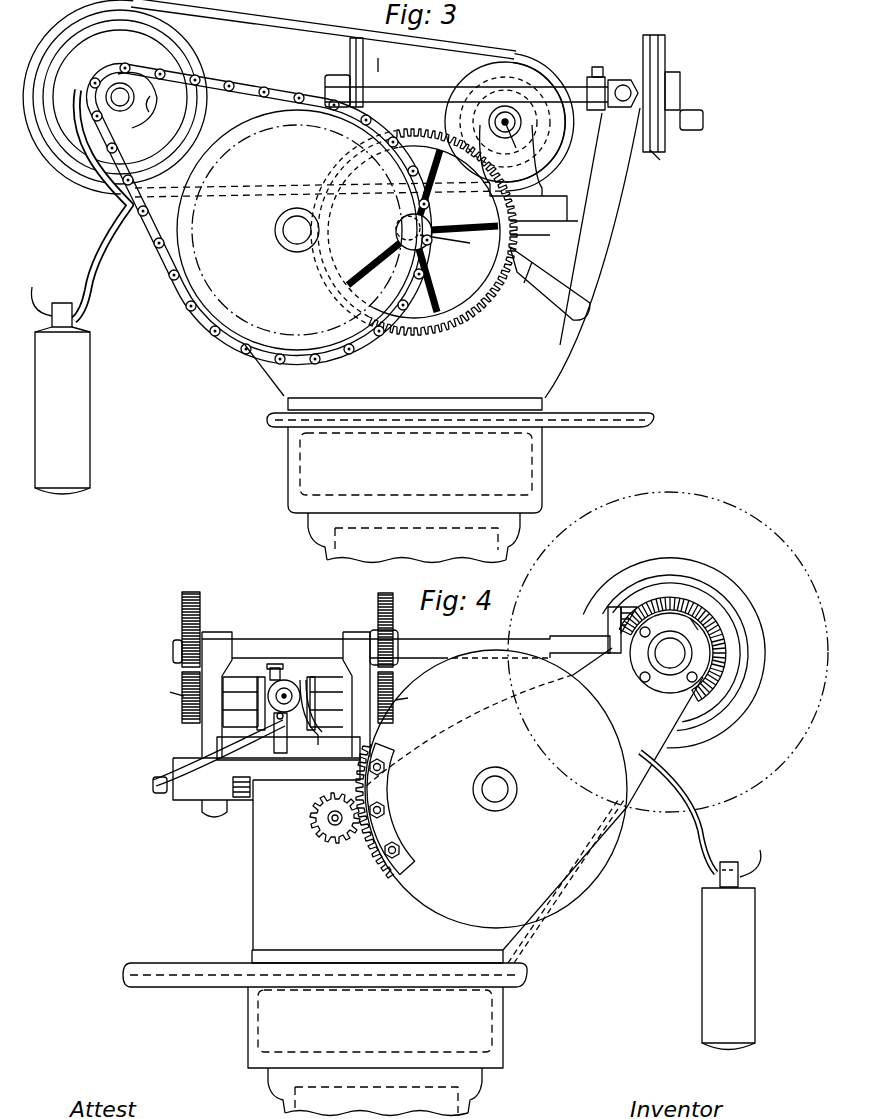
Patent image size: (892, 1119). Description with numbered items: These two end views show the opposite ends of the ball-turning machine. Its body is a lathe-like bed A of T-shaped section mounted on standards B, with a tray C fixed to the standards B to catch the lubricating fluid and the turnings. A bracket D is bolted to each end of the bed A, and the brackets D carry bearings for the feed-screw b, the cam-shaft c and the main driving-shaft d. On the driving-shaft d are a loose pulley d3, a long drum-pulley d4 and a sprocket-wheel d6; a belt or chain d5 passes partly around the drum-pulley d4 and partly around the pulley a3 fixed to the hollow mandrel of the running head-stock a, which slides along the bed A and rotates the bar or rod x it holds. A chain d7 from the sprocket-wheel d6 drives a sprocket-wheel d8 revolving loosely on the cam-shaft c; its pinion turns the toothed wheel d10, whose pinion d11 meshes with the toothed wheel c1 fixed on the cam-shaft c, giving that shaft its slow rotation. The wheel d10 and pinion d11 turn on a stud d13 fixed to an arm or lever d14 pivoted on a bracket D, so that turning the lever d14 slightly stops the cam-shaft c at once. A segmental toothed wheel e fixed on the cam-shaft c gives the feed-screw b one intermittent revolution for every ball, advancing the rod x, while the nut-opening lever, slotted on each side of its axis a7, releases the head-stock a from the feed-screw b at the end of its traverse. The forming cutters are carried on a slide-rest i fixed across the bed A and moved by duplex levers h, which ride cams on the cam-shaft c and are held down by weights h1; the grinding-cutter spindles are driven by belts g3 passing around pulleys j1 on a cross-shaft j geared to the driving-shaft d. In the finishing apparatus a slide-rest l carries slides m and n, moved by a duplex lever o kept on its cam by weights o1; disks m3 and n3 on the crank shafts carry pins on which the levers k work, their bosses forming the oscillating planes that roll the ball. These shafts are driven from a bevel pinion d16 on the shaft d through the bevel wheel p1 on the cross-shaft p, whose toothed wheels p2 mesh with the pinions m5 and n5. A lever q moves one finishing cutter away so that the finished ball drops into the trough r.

In FIG. 3, the main driving-shaft d is at (120, 97).
In FIG. 4, the main driving-shaft d is at (670, 653).
In FIG. 4, the loose pulley d3 is at (668, 652).
In FIG. 3, the drum-pulley d4 is at (259, 200).
In FIG. 4, the drum-pulley d4 is at (674, 657).
In FIG. 3, the belt or chain d5 is at (298, 98).
In FIG. 3, the sprocket-wheel d6 is at (137, 102).
In FIG. 3, the chain d7 is at (214, 181).
In FIG. 3, the sprocket-wheel d8 is at (282, 300).
In FIG. 3, the toothed wheel d10 is at (414, 234).
In FIG. 3, the toothed pinion d11 is at (445, 235).
In FIG. 3, the stud or axle d13 is at (404, 233).
In FIG. 3, the arm or lever d14 is at (550, 283).
In FIG. 4, the beveled toothed pinion d16 is at (672, 649).
In FIG. 3, the running head-stock a is at (523, 173).
In FIG. 3, the pulley a3 is at (505, 122).
In FIG. 3, the axis a7 is at (361, 359).
In FIG. 3, the bar or rod x is at (511, 142).
In FIG. 3, the bed A is at (544, 235).
In FIG. 4, the bed A is at (266, 787).
In FIG. 3, the legs or standards B is at (414, 538).
In FIG. 4, the legs or standards B is at (375, 1092).
In FIG. 3, the table or tray C is at (460, 463).
In FIG. 4, the table or tray C is at (325, 1015).
In FIG. 3, the brackets D is at (442, 259).
In FIG. 4, the brackets D is at (477, 805).
In FIG. 3, the cam-shaft c is at (297, 230).
In FIG. 4, the cam-shaft c is at (495, 789).
In FIG. 3, the toothed wheel c1 is at (297, 230).
In FIG. 3, the belts g3 is at (495, 105).
In FIG. 3, the cross-shaft j is at (481, 88).
In FIG. 3, the pulleys j1 is at (533, 91).
In FIG. 3, the duplex levers h is at (80, 205).
In FIG. 3, the weights h1 is at (62, 398).
In FIG. 4, the cross-shaft p is at (406, 637).
In FIG. 4, the beveled toothed wheel p1 is at (616, 630).
In FIG. 4, the toothed wheels p2 is at (294, 626).
In FIG. 4, the slide n is at (240, 702).
In FIG. 4, the disk n3 is at (252, 695).
In FIG. 4, the toothed pinion n5 is at (172, 697).
In FIG. 4, the slide m is at (326, 702).
In FIG. 4, the disk m3 is at (325, 695).
In FIG. 4, the toothed pinion m5 is at (406, 697).
In FIG. 4, the lever k is at (284, 683).
In FIG. 4, the slide-rest i is at (280, 733).
In FIG. 4, the lever q is at (311, 720).
In FIG. 4, the trough r is at (219, 756).
In FIG. 4, the slide-rest l is at (282, 759).
In FIG. 4, the feed-screw b is at (335, 818).
In FIG. 4, the segmental toothed wheel e is at (496, 789).
In FIG. 4, the duplex lever o is at (700, 814).
In FIG. 4, the weights o1 is at (728, 956).